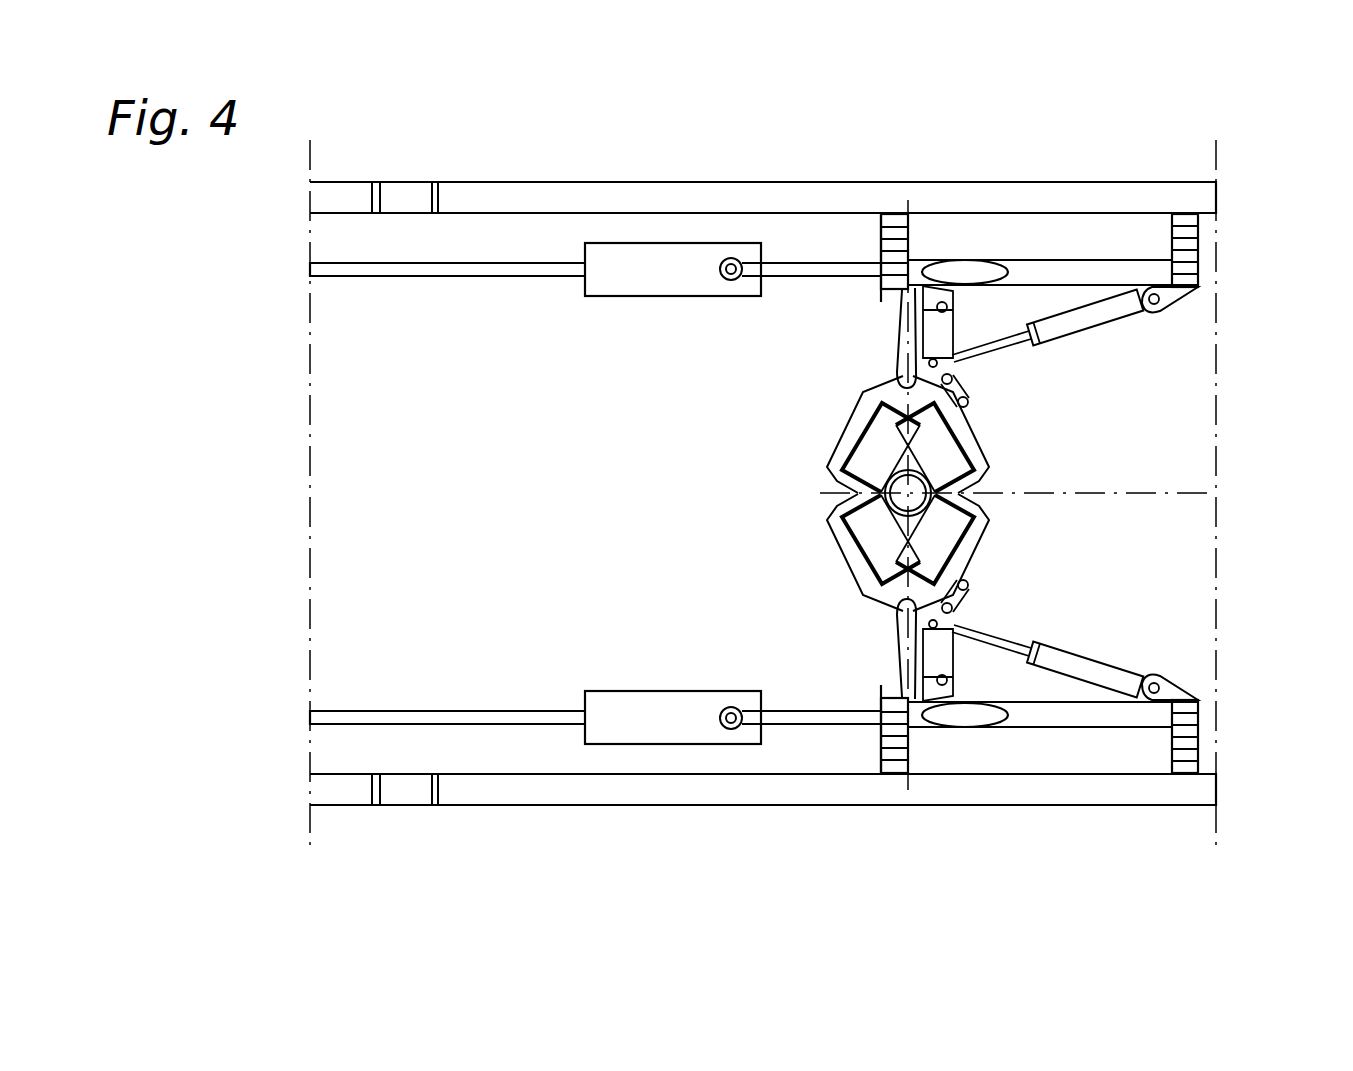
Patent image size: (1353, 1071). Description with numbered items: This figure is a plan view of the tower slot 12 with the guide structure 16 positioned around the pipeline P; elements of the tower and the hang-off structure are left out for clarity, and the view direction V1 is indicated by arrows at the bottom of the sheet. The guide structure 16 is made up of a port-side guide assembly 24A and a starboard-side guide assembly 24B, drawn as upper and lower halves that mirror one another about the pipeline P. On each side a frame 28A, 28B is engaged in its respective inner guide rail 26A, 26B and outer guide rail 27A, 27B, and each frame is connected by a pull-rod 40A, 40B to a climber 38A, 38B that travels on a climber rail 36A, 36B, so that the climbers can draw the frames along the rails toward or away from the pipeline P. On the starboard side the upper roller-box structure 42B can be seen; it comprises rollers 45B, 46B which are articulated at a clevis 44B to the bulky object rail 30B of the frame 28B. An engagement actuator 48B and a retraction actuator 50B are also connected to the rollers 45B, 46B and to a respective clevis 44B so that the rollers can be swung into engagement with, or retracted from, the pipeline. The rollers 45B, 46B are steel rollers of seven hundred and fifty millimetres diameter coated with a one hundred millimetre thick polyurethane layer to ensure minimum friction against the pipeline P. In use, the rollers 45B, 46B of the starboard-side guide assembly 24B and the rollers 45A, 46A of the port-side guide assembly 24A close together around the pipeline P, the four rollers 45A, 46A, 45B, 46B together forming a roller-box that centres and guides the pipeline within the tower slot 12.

The tower slot 12 is at (455, 313).
The guide structure 16 is at (1188, 328).
The port-side guide assembly 24A is at (604, 322).
The starboard-side guide assembly 24B is at (605, 663).
The inner guide rail 26A is at (580, 200).
The inner guide rail 26B is at (540, 790).
The outer guide rail 27A is at (335, 182).
The outer guide rail 27B is at (340, 804).
The frame 28A is at (1170, 269).
The frame 28B is at (1200, 713).
The bulky object rail 30B is at (895, 703).
The climber rail 36A is at (500, 268).
The climber rail 36B is at (482, 724).
The climber 38A is at (670, 256).
The climber 38B is at (656, 733).
The pull-rod 40A is at (810, 270).
The pull-rod 40B is at (805, 725).
The upper roller-box structure 42B is at (1052, 622).
The clevis 44B is at (1172, 696).
The roller 45A is at (855, 449).
The roller 45B is at (858, 552).
The roller 46A is at (942, 457).
The roller 46B is at (940, 532).
The engagement actuator 48B is at (955, 655).
The retraction actuator 50B is at (1093, 668).
The pipeline P is at (962, 492).
The view direction V1 is at (395, 866).